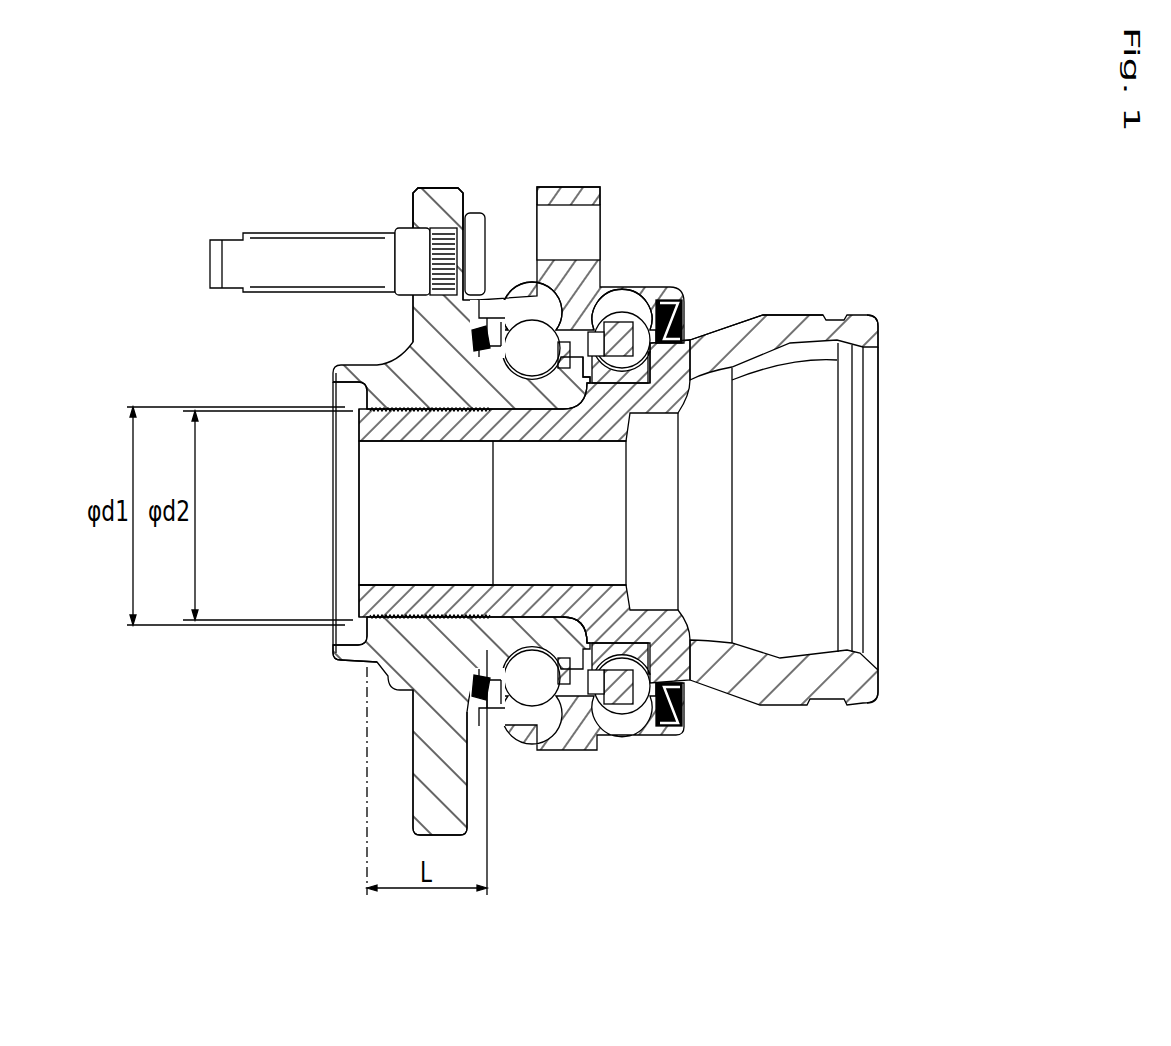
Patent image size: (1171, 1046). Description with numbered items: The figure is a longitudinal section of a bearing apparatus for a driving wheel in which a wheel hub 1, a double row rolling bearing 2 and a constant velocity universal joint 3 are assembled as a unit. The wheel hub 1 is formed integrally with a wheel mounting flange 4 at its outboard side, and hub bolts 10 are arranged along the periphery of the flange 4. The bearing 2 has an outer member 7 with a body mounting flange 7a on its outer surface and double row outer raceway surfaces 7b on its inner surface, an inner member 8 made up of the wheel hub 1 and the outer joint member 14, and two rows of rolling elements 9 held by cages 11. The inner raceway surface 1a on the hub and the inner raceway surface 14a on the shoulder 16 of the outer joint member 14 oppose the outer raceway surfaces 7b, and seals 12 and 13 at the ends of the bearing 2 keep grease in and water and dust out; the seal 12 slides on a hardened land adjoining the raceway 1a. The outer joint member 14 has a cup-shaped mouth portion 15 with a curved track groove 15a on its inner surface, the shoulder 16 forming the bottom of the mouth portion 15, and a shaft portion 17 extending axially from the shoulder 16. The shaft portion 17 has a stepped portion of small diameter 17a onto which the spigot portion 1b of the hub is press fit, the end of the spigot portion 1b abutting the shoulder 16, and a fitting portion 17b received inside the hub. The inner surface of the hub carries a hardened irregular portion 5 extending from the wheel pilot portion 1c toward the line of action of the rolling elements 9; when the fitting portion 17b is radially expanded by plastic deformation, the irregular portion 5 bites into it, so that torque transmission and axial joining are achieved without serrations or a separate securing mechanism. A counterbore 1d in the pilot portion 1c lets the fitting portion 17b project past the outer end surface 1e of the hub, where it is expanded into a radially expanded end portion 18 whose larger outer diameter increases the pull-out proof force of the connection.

The wheel hub 1 is at (381, 368).
The inner raceway surface 1a is at (421, 362).
The spigot portion 1b is at (568, 396).
The wheel pilot portion 1c is at (345, 652).
The counterbore 1d is at (362, 628).
The outer end surface 1e is at (336, 405).
The double row rolling bearing 2 is at (614, 483).
The constant velocity universal joint 3 is at (822, 298).
The wheel mounting flange 4 is at (425, 190).
The irregular portion 5 is at (358, 413).
The outer member 7 is at (612, 296).
The body mounting flange 7a is at (578, 190).
The outer raceway surface 7b is at (528, 345).
The inner member 8 is at (428, 452).
The rolling elements 9 is at (610, 695).
The hub bolt 10 is at (274, 243).
The cage 11 is at (672, 345).
The seal 12 is at (485, 680).
The seal 13 is at (676, 706).
The outer joint member 14 is at (757, 313).
The inner raceway surface 14a is at (655, 372).
The mouth portion 15 is at (866, 328).
The track groove 15a is at (845, 352).
The shoulder 16 is at (660, 640).
The shaft portion 17 is at (597, 583).
The stepped portion of small diameter 17a is at (538, 625).
The fitting portion 17b is at (390, 600).
The radially expanded end portion 18 is at (352, 615).